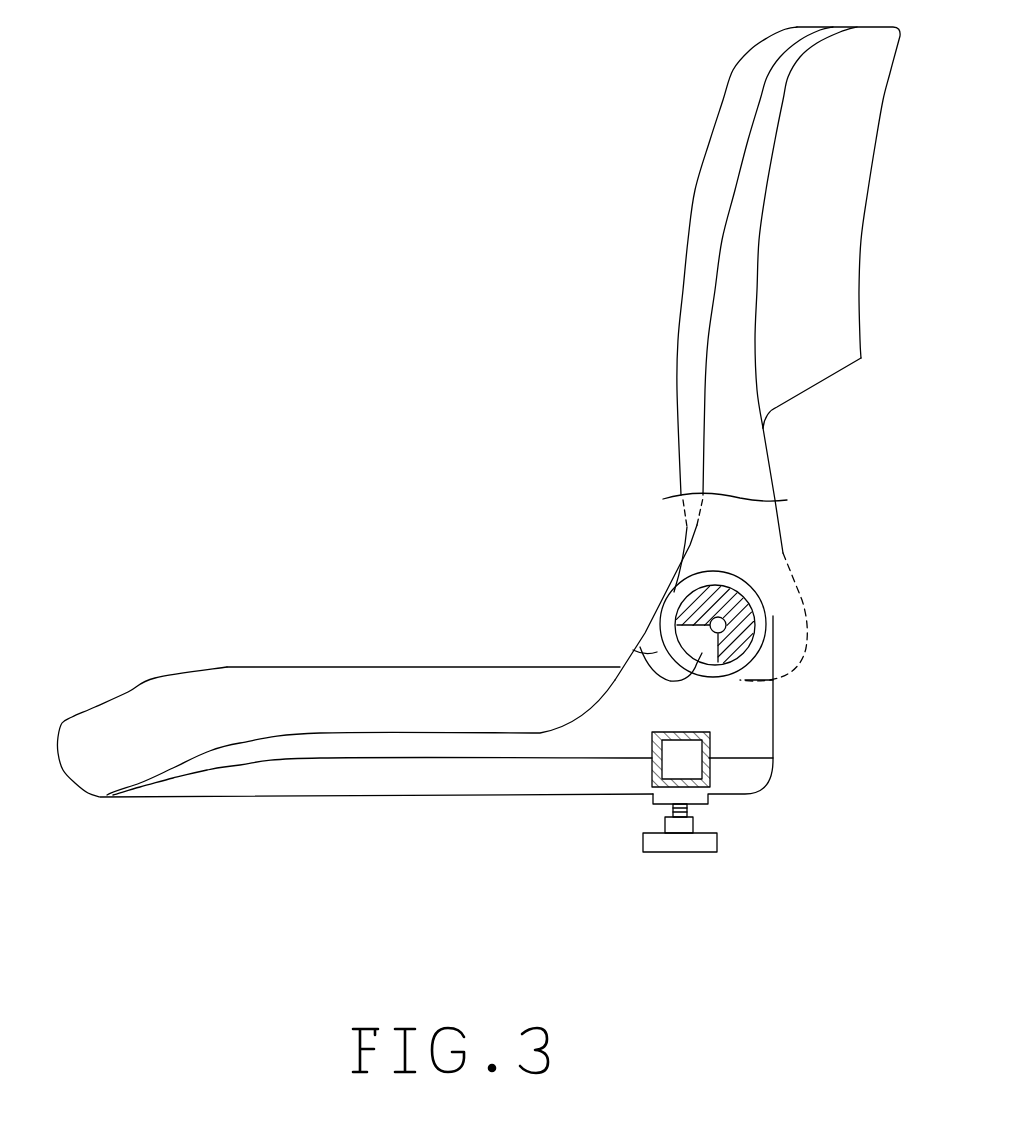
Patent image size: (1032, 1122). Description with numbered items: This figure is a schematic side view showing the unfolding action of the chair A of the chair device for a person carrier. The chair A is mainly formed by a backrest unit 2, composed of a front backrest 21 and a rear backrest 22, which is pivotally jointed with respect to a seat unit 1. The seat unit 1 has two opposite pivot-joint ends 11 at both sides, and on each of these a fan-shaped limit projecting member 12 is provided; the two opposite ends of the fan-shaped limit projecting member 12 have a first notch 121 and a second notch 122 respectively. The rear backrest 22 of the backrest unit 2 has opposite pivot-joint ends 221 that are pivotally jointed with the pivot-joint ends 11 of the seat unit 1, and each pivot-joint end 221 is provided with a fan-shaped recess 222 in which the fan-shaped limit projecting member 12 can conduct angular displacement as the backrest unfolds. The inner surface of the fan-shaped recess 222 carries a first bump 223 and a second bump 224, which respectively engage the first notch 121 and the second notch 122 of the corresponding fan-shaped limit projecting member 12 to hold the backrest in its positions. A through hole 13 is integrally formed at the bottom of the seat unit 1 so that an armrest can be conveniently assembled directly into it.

The seat unit 1 is at (498, 780).
The pivot-joint ends 11 is at (640, 647).
The fan-shaped limit projecting member 12 is at (751, 677).
The first notch 121 is at (779, 605).
The second notch 122 is at (738, 668).
The through hole 13 is at (708, 770).
The backrest unit 2 is at (663, 393).
The front backrest 21 is at (695, 280).
The rear backrest 22 is at (799, 367).
The pivot-joint ends 221 is at (803, 642).
The fan-shaped recess 222 is at (680, 590).
The first bump 223 is at (783, 553).
The second bump 224 is at (633, 650).
The chair A is at (340, 547).